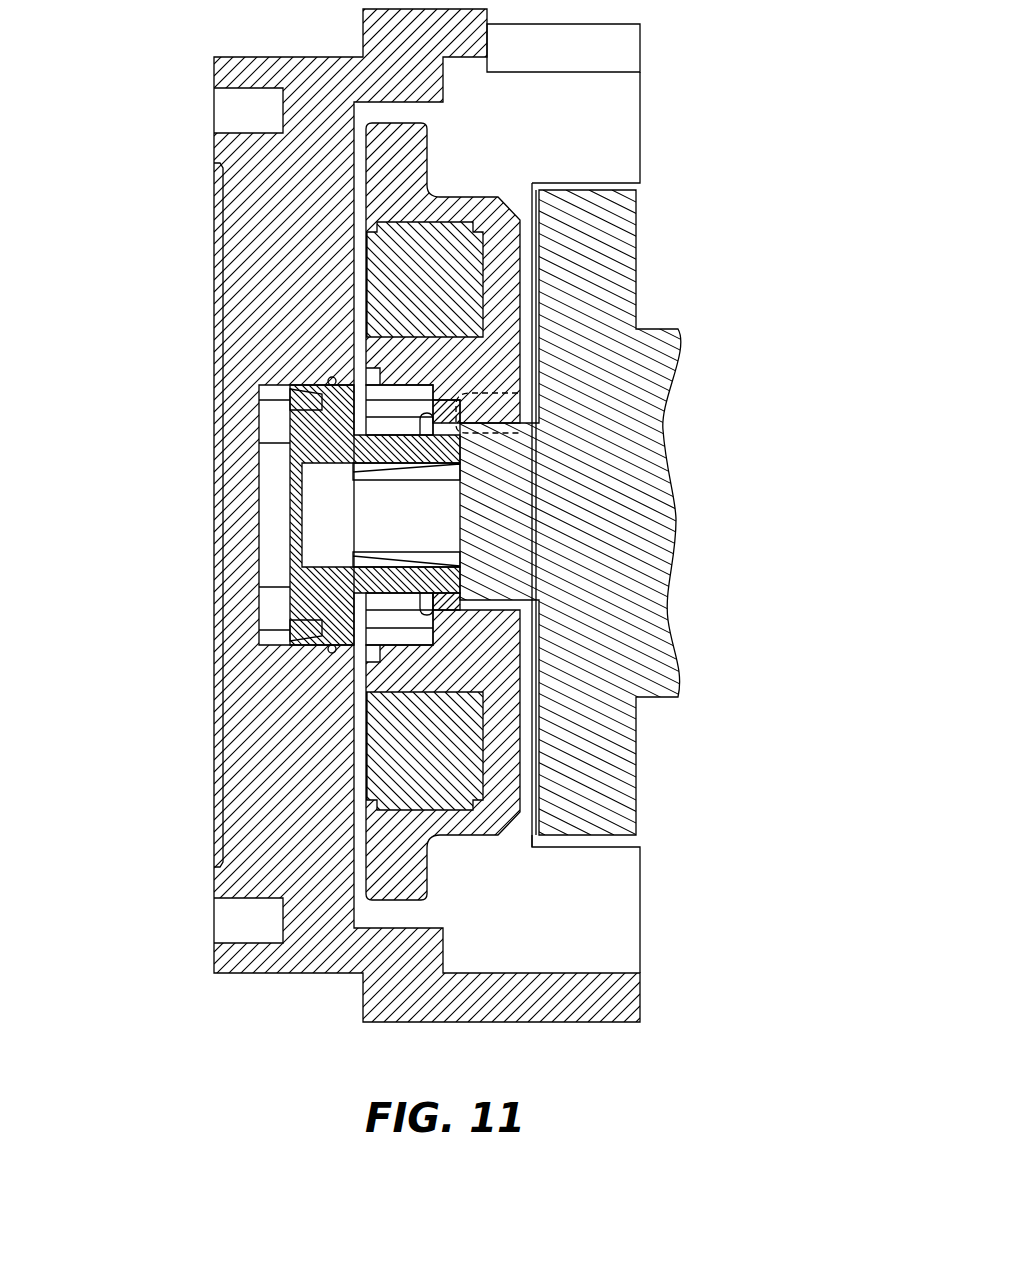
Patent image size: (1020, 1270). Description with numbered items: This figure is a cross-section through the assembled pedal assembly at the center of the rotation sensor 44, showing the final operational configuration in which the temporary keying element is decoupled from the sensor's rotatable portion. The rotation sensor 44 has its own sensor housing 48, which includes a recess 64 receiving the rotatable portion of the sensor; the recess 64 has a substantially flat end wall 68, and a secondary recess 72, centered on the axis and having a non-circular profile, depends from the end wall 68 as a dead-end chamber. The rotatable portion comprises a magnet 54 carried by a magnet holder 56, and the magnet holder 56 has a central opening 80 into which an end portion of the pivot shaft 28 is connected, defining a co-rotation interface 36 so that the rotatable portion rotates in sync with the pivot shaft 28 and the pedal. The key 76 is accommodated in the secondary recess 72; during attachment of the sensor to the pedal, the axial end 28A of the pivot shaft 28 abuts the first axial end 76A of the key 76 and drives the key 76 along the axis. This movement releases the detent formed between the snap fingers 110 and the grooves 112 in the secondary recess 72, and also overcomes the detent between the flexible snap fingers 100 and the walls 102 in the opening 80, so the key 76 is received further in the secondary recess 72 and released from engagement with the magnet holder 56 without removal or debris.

The rotation sensor 44 is at (157, 154).
The sensor housing 48 is at (328, 125).
The magnet 54 is at (438, 253).
The magnet holder 56 is at (500, 300).
The flexible snap fingers 100 is at (440, 410).
The walls 102 is at (432, 425).
The co-rotation interface 36 is at (518, 391).
The first axial end 76A is at (472, 504).
The key 76 is at (413, 573).
The pivot shaft 28 is at (563, 560).
The axial end 28A is at (450, 492).
The secondary recess 72 is at (272, 408).
The snap fingers 110 is at (295, 393).
The grooves 112 is at (330, 379).
The central opening 80 is at (413, 640).
The recess 64 is at (427, 917).
The end wall 68 is at (363, 910).